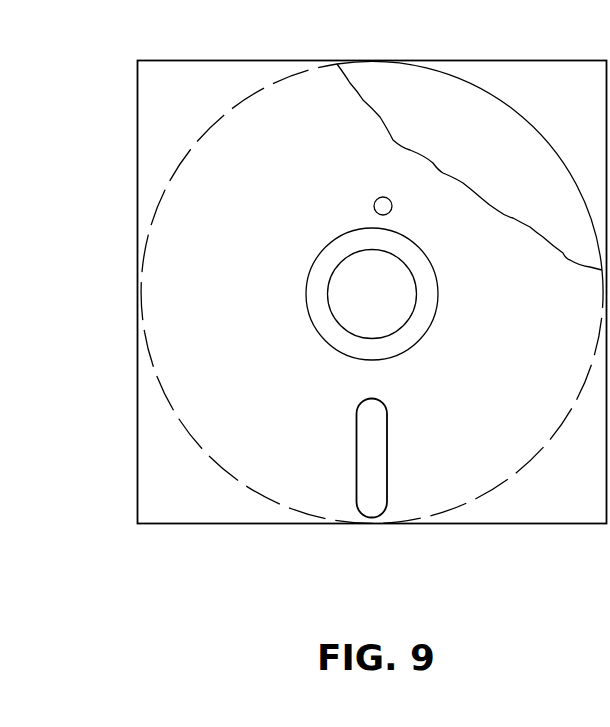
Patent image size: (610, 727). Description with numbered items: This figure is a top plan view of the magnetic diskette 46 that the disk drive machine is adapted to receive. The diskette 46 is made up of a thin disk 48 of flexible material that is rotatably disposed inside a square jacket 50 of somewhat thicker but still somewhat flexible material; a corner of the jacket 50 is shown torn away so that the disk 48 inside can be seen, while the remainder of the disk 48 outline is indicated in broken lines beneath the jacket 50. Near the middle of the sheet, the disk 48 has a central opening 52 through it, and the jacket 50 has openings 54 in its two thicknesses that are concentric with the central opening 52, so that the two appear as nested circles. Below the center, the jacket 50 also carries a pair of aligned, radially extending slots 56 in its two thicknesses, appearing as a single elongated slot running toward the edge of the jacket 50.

The diskette 46 is at (223, 58).
The disk 48 is at (542, 137).
The jacket 50 is at (521, 526).
The central opening 52 is at (338, 271).
The openings 54 is at (430, 262).
The slots 56 is at (385, 441).